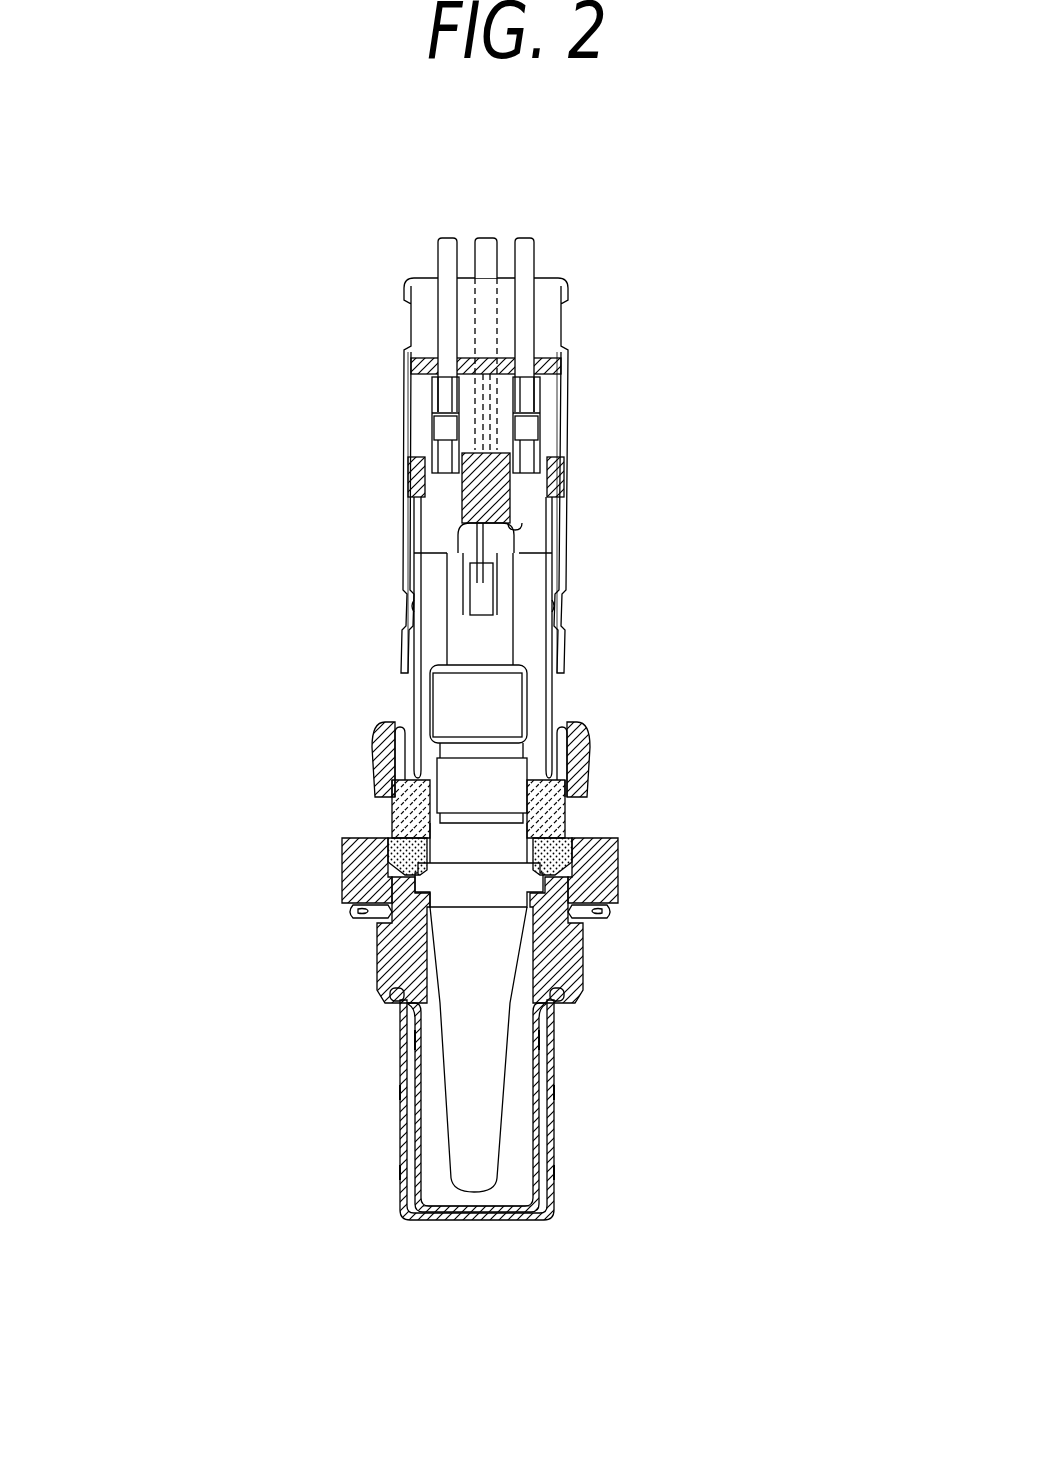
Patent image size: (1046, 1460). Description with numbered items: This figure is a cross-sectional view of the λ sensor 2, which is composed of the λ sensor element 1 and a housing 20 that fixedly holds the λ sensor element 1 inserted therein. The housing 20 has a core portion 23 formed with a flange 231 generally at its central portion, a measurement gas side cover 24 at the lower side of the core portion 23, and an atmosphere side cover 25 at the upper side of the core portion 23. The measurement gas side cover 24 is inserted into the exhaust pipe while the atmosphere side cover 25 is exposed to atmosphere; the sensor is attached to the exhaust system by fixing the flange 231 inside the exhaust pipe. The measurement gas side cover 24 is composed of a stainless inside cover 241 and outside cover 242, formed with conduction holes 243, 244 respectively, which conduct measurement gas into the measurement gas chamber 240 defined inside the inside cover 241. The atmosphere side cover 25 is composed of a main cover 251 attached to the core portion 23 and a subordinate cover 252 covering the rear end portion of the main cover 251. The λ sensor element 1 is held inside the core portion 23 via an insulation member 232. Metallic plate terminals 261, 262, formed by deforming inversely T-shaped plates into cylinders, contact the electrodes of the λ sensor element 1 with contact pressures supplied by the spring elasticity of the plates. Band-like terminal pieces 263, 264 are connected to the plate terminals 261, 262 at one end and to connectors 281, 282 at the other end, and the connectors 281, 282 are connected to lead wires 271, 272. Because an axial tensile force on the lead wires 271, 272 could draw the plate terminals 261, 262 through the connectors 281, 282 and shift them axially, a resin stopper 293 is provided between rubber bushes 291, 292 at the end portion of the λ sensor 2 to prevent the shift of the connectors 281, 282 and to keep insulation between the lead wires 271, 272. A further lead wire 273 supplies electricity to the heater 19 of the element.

The λ sensor element 1 is at (470, 1188).
The λ sensor 2 is at (273, 997).
The heater 19 is at (480, 653).
The housing 20 is at (600, 832).
The core portion 23 is at (415, 760).
The measurement gas side cover 24 is at (396, 1145).
The atmosphere side cover 25 is at (570, 547).
The flange 231 is at (588, 873).
The insulation member 232 is at (415, 917).
The measurement gas chamber 240 is at (503, 1190).
The inside cover 241 is at (527, 1188).
The outside cover 242 is at (550, 1120).
The conduction holes 243 is at (400, 1092).
The conduction holes 244 is at (533, 1042).
The main cover 251 is at (410, 667).
The subordinate cover 252 is at (398, 541).
The plate terminal 261 is at (468, 703).
The plate terminal 262 is at (497, 783).
The terminal piece 263 is at (450, 597).
The terminal piece 264 is at (487, 614).
The lead wire 271 is at (440, 258).
The lead wire 272 is at (528, 258).
The lead wire 273 is at (485, 248).
The connector 281 is at (420, 416).
The connector 282 is at (550, 432).
The rubber bush 291 is at (550, 290).
The rubber bush 292 is at (553, 382).
The stopper 293 is at (462, 344).